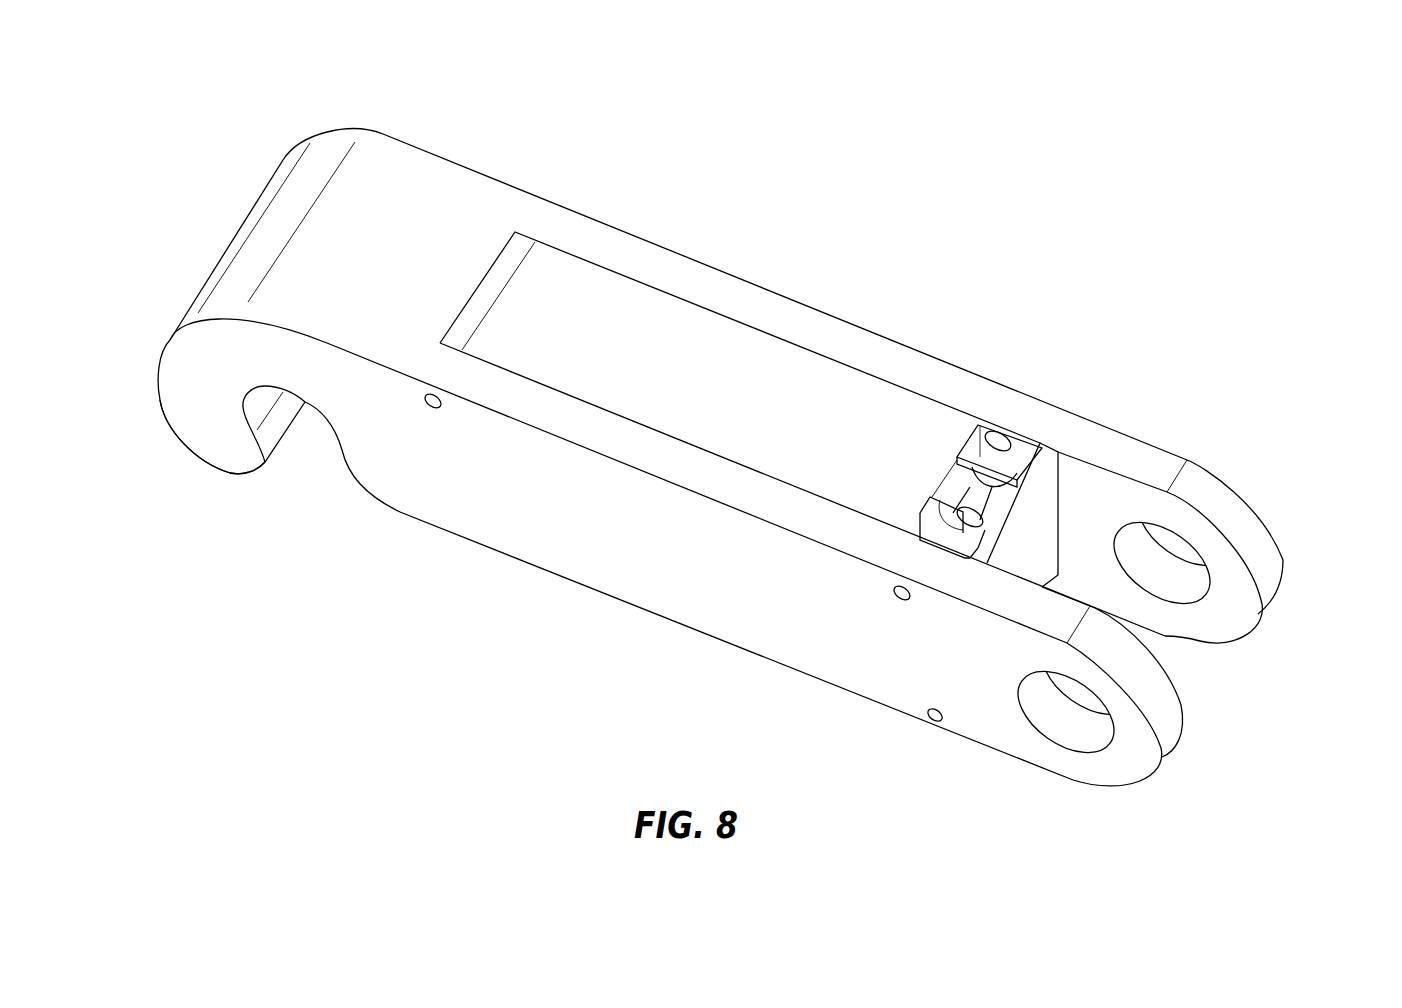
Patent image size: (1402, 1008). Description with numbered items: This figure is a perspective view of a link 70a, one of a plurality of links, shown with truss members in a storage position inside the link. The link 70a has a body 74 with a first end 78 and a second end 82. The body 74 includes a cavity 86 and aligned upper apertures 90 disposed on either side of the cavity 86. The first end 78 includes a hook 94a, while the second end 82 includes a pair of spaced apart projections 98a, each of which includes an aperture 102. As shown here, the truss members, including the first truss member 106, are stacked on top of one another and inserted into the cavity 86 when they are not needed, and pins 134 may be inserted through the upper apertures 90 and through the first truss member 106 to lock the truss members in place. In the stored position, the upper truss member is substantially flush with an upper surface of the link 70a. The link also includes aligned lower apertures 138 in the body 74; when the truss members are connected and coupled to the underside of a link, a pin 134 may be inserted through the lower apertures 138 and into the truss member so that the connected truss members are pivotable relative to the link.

The link 70a is at (233, 150).
The body 74 is at (423, 245).
The first end 78 is at (192, 272).
The hook 94a is at (220, 398).
The upper apertures 90 is at (433, 400).
The first truss member 106 is at (707, 363).
The pins 134 is at (1015, 458).
The cavity 86 is at (1010, 447).
The second end 82 is at (1247, 463).
The projections 98a is at (1267, 570).
The aperture 102 is at (1150, 553).
The lower apertures 138 is at (928, 715).